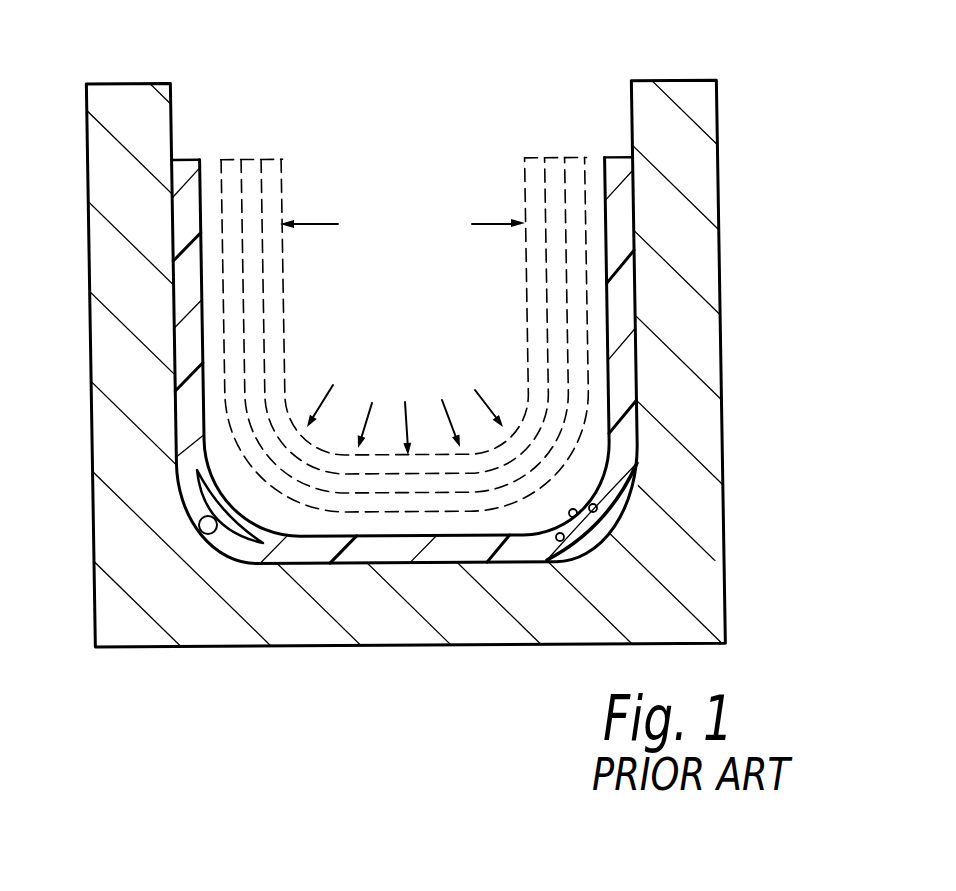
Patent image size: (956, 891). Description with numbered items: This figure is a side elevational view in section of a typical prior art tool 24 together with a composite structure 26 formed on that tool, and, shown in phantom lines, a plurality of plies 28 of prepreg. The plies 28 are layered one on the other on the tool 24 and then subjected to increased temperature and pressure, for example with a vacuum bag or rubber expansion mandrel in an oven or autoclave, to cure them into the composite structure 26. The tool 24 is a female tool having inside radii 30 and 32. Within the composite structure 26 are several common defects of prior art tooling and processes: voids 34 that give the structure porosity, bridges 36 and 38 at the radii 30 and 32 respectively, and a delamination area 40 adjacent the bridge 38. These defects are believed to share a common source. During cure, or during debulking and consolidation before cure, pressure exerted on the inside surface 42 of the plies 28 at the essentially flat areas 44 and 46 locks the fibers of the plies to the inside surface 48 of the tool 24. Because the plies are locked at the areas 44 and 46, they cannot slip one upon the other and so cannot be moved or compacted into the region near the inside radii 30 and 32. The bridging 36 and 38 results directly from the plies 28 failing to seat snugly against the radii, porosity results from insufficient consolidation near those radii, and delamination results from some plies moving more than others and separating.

The prior art tool 24 is at (774, 164).
The composite structure 26 is at (608, 157).
The plies 28 is at (545, 177).
The inside radius 30 is at (618, 538).
The inside radius 32 is at (222, 525).
The voids 34 is at (595, 508).
The bridge 36 is at (578, 547).
The bridge 38 is at (236, 542).
The delamination area 40 is at (210, 498).
The inside surface 42 is at (522, 328).
The flat area 44 is at (323, 223).
The flat area 46 is at (408, 420).
The inside surface 48 is at (632, 98).